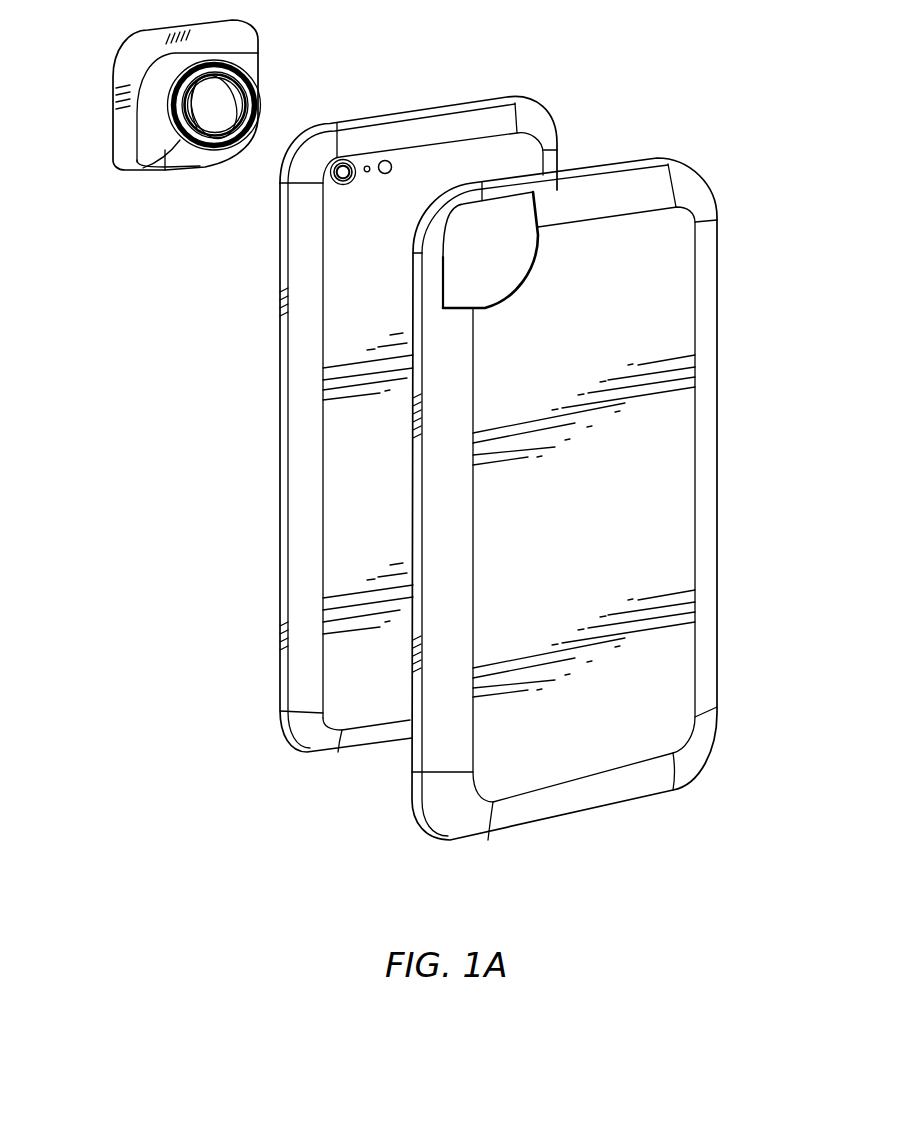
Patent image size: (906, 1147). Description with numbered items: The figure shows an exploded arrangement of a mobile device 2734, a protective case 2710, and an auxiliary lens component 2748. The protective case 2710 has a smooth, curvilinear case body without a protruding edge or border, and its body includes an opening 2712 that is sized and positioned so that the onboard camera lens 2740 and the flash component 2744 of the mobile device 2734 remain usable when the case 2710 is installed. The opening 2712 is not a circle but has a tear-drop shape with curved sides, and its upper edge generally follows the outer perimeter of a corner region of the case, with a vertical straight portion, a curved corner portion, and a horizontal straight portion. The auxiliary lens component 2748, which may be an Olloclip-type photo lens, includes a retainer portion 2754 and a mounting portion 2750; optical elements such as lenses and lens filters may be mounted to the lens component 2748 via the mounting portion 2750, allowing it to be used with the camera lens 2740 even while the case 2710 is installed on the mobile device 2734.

The protective case 2710 is at (672, 440).
The opening 2712 is at (522, 252).
The mobile device 2734 is at (304, 752).
The onboard camera lens 2740 is at (338, 186).
The flash component 2744 is at (387, 161).
The auxiliary lens component 2748 is at (156, 33).
The retainer portion 2754 is at (148, 87).
The mounting portion 2750 is at (140, 168).